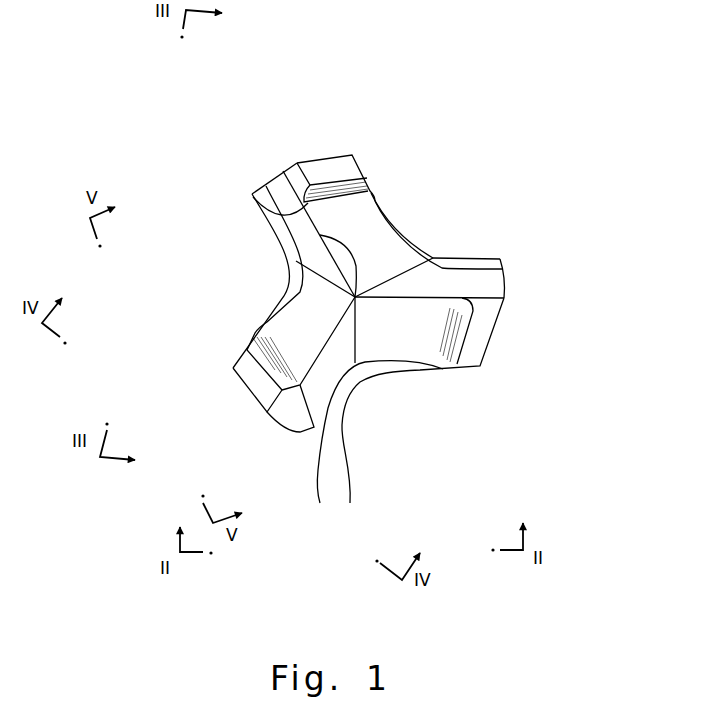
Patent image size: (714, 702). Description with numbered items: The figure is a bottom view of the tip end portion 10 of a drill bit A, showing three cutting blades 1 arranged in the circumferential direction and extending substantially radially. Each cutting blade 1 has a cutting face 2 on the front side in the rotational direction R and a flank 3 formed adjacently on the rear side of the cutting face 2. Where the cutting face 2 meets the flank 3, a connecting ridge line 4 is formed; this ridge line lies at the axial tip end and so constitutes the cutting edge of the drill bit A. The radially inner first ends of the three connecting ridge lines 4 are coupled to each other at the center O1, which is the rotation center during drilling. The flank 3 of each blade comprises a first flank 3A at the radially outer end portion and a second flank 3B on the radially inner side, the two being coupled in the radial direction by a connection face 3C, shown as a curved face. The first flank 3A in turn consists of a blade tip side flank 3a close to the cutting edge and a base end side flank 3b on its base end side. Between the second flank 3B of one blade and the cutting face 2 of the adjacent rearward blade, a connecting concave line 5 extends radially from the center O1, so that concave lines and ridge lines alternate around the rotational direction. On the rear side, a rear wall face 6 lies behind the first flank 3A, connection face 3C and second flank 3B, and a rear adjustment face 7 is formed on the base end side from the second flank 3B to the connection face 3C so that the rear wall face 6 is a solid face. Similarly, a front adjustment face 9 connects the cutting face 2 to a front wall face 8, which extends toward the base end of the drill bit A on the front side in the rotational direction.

The cutting blade 1 is at (438, 296).
The cutting face 2 is at (426, 283).
The flank 3 is at (380, 343).
The first flank 3A is at (605, 326).
The blade tip side flank 3a is at (492, 305).
The base end side flank 3b is at (477, 340).
The second flank 3B is at (440, 368).
The connection face 3C is at (447, 340).
The connecting ridge line 4 is at (392, 297).
The connecting concave line 5 is at (356, 338).
The rear wall face 6 is at (413, 371).
The rear adjustment face 7 is at (398, 372).
The front wall face 8 is at (345, 440).
The front adjustment face 9 is at (316, 427).
The tip end portion 10 is at (512, 277).
The center O1 is at (320, 234).
The rotational direction R is at (327, 86).
The drill bit A is at (537, 139).